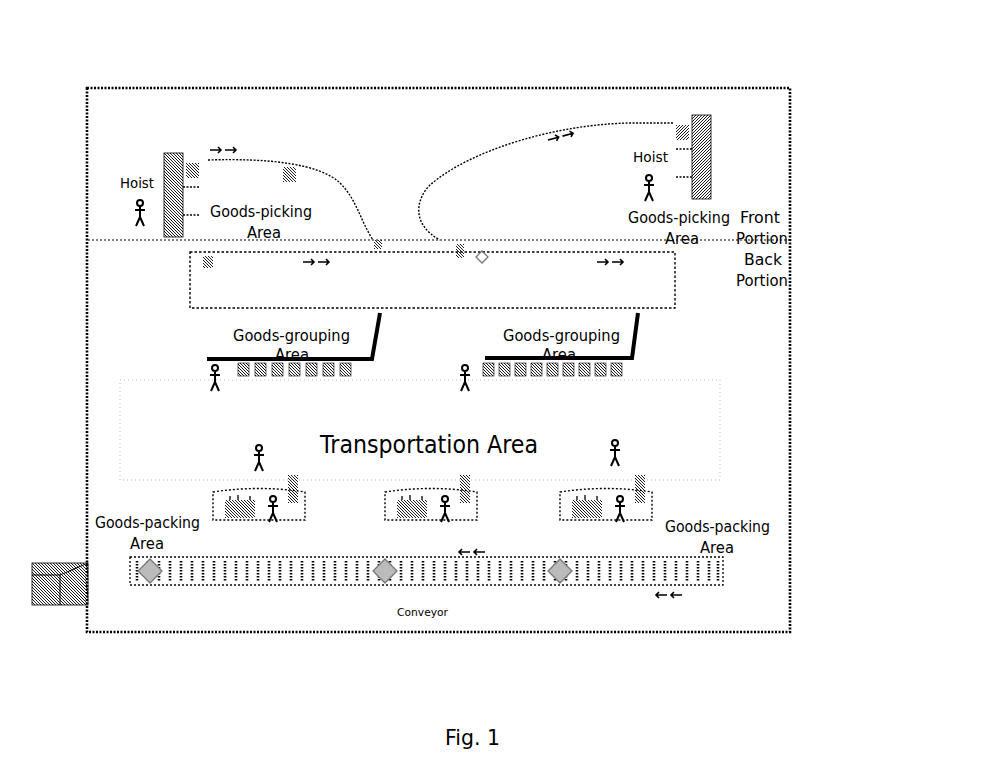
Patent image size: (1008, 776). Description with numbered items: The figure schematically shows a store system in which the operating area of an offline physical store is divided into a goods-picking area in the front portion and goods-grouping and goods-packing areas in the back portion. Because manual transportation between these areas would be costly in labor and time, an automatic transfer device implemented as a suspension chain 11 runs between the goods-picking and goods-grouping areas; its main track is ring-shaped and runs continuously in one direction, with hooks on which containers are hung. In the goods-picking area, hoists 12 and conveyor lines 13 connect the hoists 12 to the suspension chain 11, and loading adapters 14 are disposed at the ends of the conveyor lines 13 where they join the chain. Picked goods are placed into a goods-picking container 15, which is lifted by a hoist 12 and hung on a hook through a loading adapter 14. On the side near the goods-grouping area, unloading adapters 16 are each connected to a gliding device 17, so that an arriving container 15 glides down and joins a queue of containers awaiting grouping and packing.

The suspension chain 11 is at (678, 272).
The hoist 12 is at (710, 153).
The conveyor line 13 is at (610, 123).
The loading adapter 14 is at (493, 252).
The goods-picking container 15 is at (632, 371).
The unloading adapter 16 is at (638, 310).
The gliding device 17 is at (640, 342).